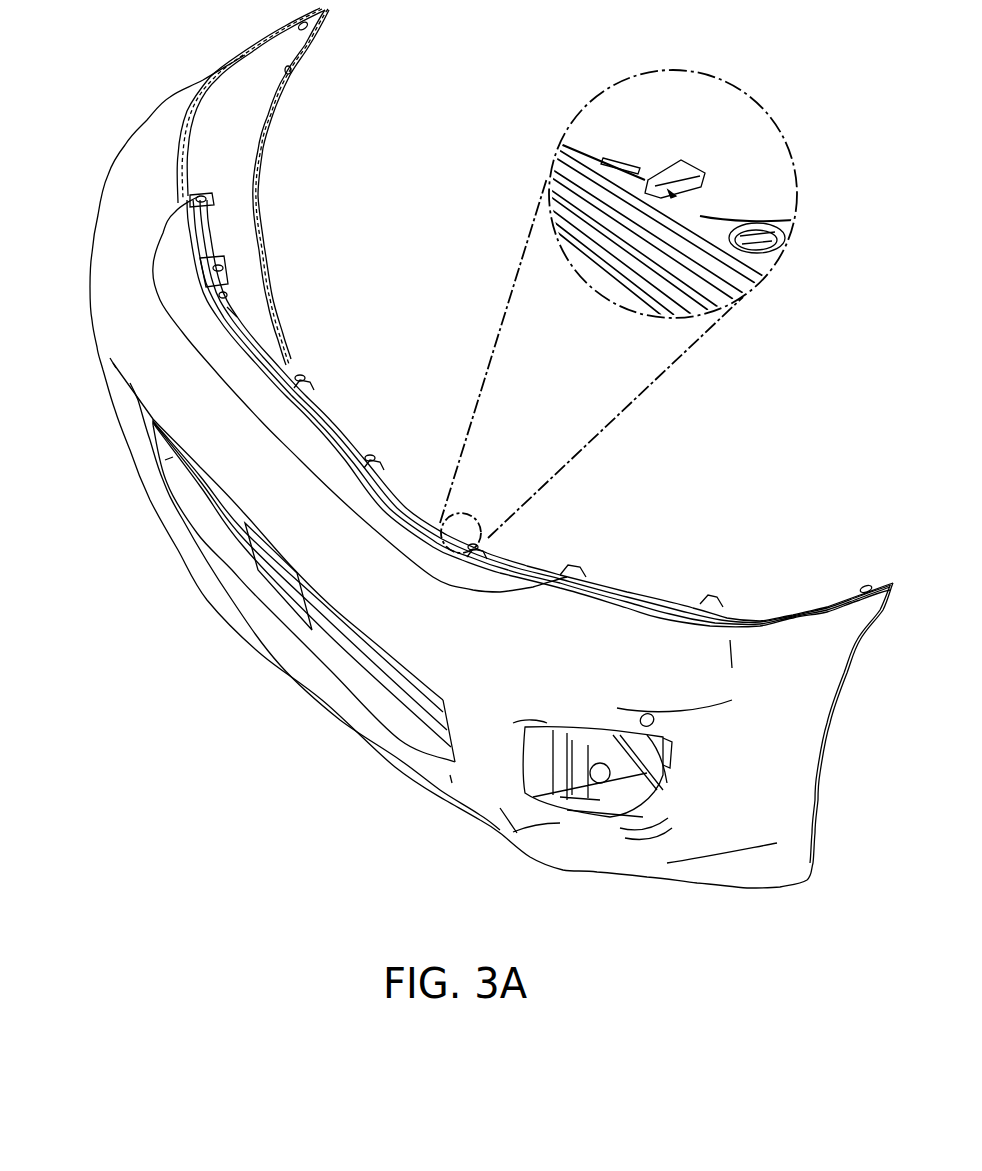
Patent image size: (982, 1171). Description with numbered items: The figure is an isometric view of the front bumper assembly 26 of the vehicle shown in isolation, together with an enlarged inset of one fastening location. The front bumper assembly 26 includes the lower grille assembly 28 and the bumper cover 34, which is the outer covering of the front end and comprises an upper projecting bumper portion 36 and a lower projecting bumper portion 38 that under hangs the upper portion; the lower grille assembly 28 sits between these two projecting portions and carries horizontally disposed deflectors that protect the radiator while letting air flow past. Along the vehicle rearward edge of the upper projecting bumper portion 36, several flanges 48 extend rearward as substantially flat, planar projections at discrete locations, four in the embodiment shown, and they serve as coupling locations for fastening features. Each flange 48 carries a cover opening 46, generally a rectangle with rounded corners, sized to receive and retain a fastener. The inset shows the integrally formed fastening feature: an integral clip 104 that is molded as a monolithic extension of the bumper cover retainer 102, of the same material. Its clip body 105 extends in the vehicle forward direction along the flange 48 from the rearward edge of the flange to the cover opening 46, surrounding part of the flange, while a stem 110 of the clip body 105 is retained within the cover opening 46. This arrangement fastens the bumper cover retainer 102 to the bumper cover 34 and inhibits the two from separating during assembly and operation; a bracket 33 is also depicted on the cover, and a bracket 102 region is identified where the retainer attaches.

The front bumper assembly 26 is at (110, 520).
The lower grille assembly 28 is at (293, 593).
The upper mounting bracket 33 is at (207, 200).
The bumper cover 34 is at (93, 250).
The upper projecting bumper portion 36 is at (163, 407).
The lower projecting bumper portion 38 is at (337, 702).
The cover opening 46 is at (675, 202).
The flange 48 is at (233, 297).
The bumper cover retainer 102 is at (217, 263).
The integral clip 104 is at (700, 125).
The clip body 105 is at (658, 177).
The stem 110 is at (648, 183).